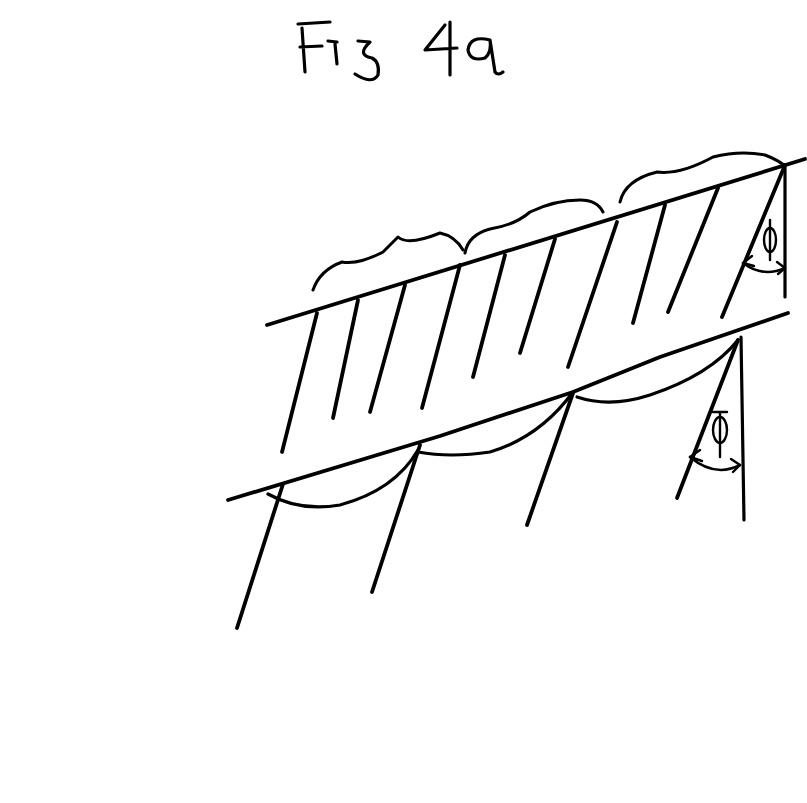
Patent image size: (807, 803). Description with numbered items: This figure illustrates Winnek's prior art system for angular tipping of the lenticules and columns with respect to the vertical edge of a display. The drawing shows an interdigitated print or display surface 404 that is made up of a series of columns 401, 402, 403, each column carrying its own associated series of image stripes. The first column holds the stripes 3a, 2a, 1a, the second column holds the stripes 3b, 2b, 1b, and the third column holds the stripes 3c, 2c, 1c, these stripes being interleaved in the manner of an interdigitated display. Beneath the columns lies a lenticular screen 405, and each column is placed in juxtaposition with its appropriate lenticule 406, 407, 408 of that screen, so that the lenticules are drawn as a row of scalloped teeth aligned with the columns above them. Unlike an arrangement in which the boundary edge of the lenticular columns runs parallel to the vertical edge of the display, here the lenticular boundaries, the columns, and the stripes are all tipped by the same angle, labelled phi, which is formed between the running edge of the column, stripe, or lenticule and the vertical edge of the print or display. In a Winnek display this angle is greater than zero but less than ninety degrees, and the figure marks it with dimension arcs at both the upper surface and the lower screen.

The column 401 is at (416, 195).
The column 402 is at (534, 205).
The column 403 is at (702, 163).
The interdigitated print or display surface 404 is at (263, 380).
The lenticular screen 405 is at (192, 573).
The lenticule 406 is at (320, 592).
The lenticule 407 is at (472, 532).
The lenticule 408 is at (605, 513).
The stripe 1a is at (397, 348).
The stripe 2a is at (355, 359).
The stripe 3a is at (305, 382).
The stripe 1b is at (546, 296).
The stripe 2b is at (499, 316).
The stripe 3b is at (451, 336).
The stripe 1c is at (699, 250).
The stripe 2c is at (657, 264).
The stripe 3c is at (597, 294).